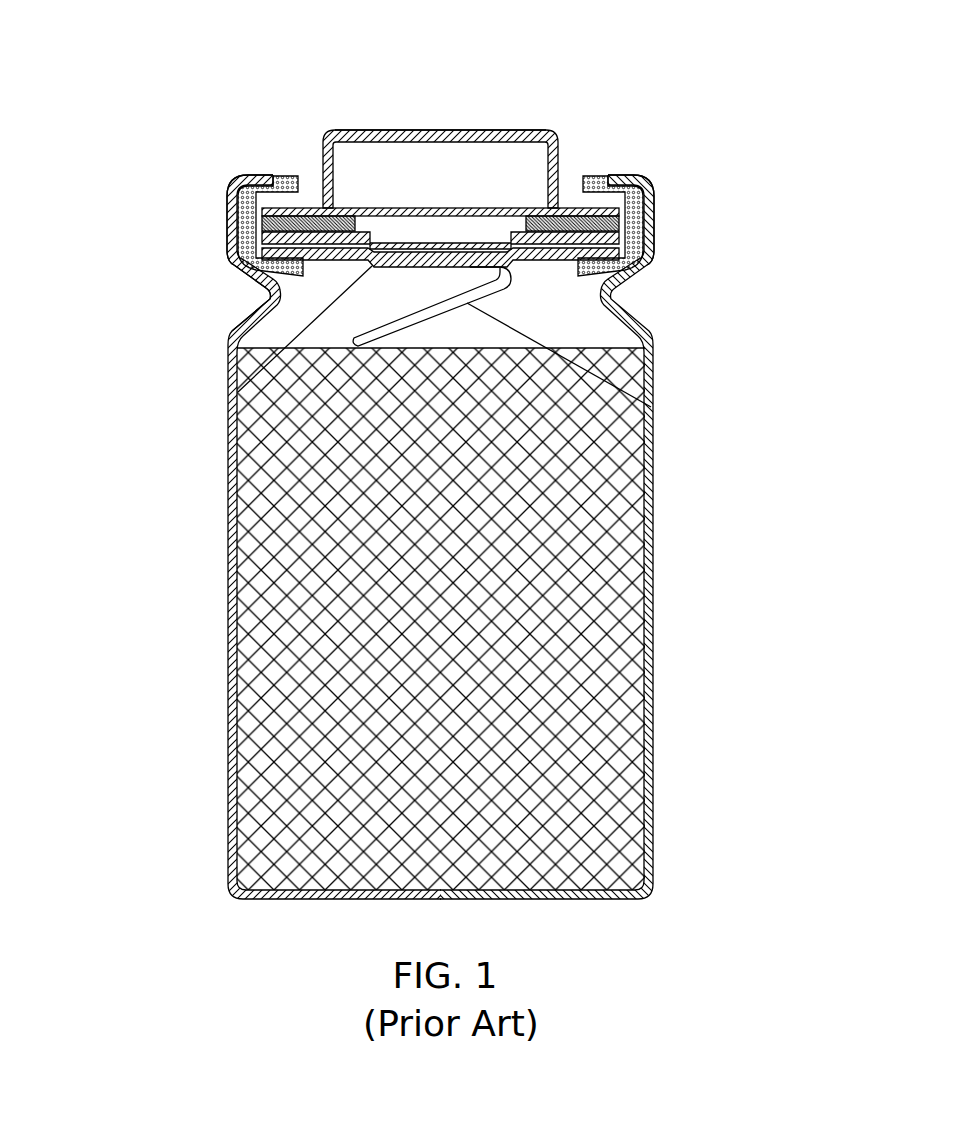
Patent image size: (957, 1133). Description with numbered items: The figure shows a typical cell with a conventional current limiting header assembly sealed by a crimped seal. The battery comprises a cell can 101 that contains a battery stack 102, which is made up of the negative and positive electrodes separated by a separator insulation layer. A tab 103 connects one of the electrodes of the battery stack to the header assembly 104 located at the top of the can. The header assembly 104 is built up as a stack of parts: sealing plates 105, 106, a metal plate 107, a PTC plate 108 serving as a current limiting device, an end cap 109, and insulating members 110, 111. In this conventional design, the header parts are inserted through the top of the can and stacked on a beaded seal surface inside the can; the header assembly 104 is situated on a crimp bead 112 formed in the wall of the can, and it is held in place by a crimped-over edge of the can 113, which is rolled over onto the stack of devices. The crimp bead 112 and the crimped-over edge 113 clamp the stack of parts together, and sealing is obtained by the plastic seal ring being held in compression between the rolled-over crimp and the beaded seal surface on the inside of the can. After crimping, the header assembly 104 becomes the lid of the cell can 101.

The cell can 101 is at (655, 760).
The battery stack 102 is at (595, 488).
The tab 103 is at (643, 404).
The header assembly 104 is at (315, 187).
The sealing plate 105 is at (228, 395).
The sealing plate 106 is at (467, 247).
The metal plate 107 is at (618, 175).
The PTC plate 108 is at (562, 208).
The end cap 109 is at (415, 128).
The insulating member 110 is at (637, 233).
The insulating member 111 is at (652, 242).
The crimp bead 112 is at (272, 293).
The crimped-over edge of the can 113 is at (228, 203).